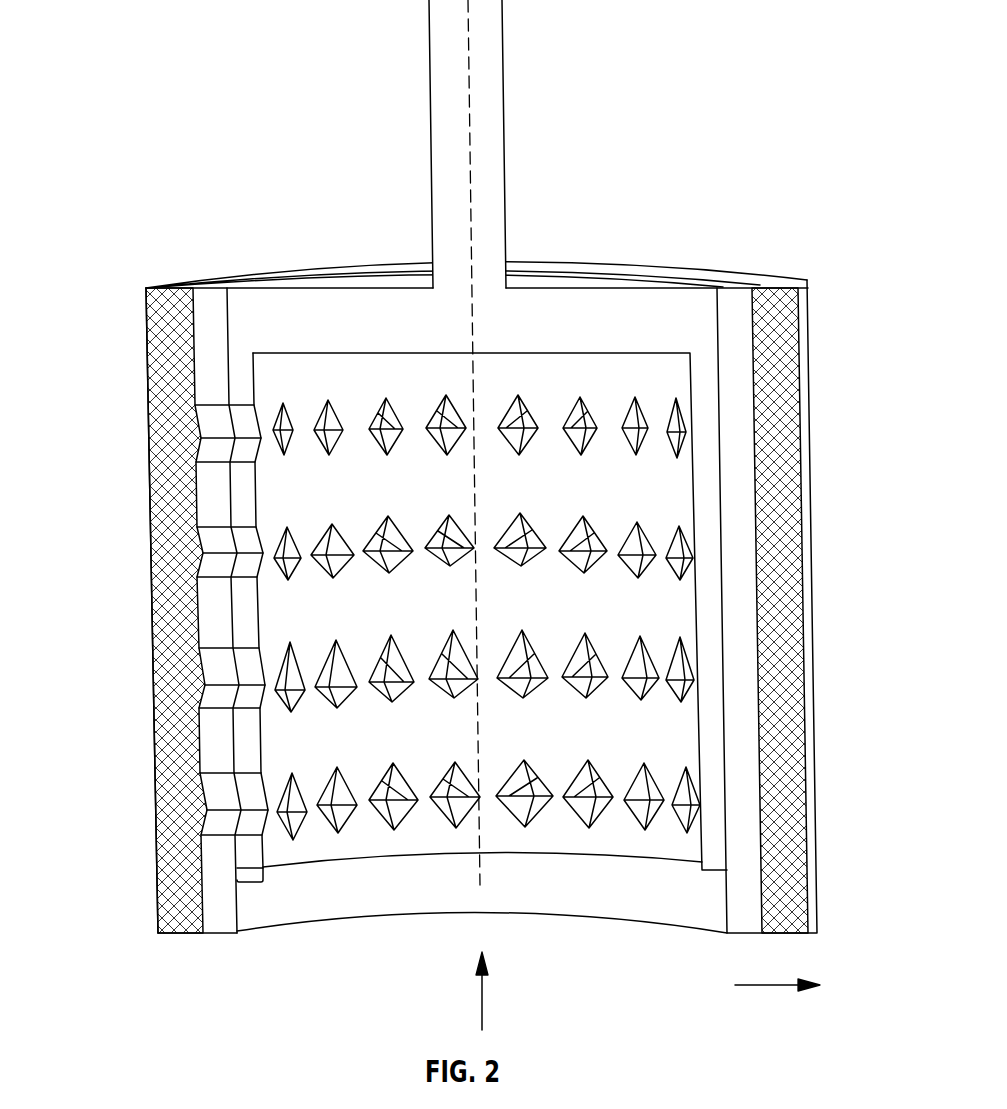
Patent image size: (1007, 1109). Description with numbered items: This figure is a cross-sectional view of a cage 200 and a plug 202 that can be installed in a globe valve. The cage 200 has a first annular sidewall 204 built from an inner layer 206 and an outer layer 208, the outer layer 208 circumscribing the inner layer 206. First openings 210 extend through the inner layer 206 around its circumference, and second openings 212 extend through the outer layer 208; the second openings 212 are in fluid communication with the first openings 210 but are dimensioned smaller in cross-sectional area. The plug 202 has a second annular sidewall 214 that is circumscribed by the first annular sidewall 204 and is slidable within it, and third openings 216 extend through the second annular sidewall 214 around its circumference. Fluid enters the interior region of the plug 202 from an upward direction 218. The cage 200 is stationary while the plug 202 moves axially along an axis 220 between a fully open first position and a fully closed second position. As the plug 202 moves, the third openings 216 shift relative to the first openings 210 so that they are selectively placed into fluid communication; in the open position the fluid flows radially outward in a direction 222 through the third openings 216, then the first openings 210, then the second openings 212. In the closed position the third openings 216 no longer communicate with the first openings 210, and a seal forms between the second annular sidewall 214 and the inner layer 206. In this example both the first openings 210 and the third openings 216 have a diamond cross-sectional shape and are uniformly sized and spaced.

The cage 200 is at (146, 287).
The plug 202 is at (572, 272).
The first annular sidewall 204 is at (160, 938).
The inner layer 206 is at (223, 275).
The outer layer 208 is at (168, 274).
The first openings 210 is at (197, 440).
The second openings 212 is at (813, 545).
The second annular sidewall 214 is at (252, 882).
The third openings 216 is at (272, 555).
The direction 218 is at (482, 997).
The axis 220 is at (468, 150).
The direction 222 is at (771, 987).